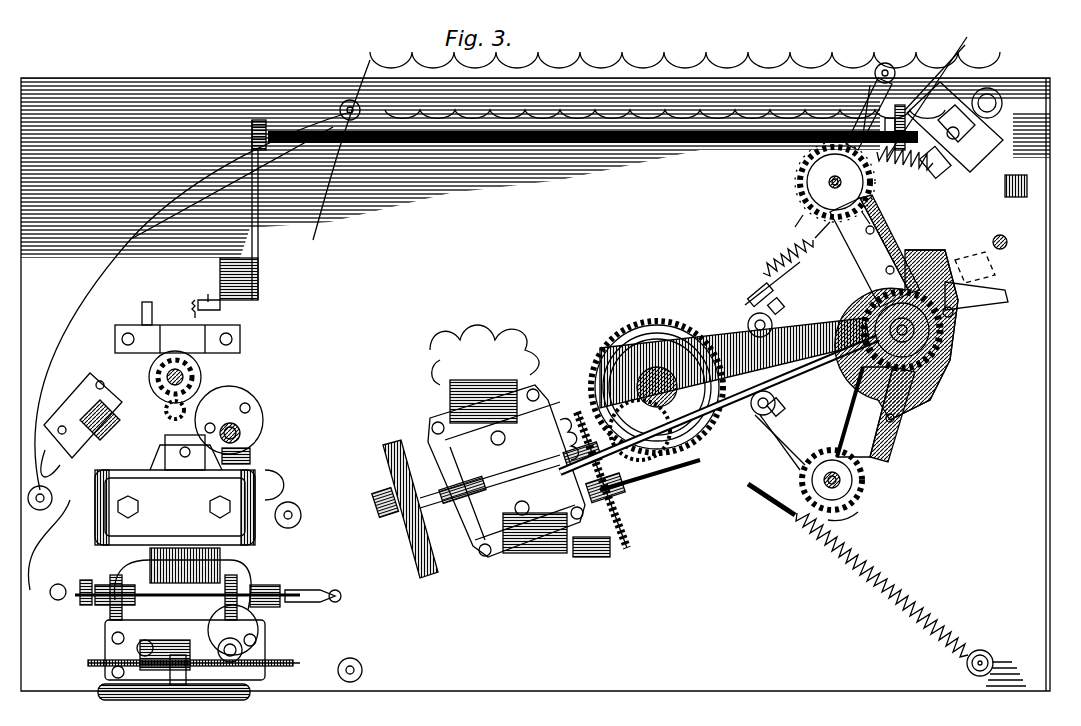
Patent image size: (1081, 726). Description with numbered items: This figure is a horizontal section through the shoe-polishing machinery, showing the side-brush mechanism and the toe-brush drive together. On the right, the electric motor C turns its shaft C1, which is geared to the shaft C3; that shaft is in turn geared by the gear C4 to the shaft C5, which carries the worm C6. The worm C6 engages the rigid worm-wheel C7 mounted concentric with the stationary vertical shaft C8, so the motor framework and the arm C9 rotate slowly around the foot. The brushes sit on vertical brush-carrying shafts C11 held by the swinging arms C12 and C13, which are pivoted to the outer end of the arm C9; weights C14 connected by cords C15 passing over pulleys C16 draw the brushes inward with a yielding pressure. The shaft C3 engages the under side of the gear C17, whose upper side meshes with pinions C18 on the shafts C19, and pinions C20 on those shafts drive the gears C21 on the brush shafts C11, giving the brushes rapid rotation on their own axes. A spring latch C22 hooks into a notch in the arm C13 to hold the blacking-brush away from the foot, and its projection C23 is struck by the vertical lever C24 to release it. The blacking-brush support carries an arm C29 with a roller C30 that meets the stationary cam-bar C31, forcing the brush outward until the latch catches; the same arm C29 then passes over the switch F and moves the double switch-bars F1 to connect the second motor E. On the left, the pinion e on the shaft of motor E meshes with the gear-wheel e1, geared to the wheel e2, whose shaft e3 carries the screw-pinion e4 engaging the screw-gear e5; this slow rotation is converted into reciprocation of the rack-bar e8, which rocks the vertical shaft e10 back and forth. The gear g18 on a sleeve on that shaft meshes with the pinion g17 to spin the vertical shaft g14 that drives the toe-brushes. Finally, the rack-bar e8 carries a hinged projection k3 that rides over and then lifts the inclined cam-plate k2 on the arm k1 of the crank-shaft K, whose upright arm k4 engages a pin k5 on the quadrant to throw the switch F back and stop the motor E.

The crank-shaft K is at (718, 143).
The arm k1 is at (259, 226).
The inclined cam-plate k2 is at (258, 272).
The hinged projection k3 is at (222, 305).
The upright arm k4 is at (935, 93).
The pin k5 is at (906, 118).
The rack-bar e8 is at (202, 318).
The electric motor E is at (180, 491).
The vertical shaft e10 is at (183, 377).
The gear g18 is at (184, 408).
The pinion g17 is at (98, 415).
The vertical shaft g14 is at (240, 416).
The screw-pinion e4 is at (250, 456).
The screw-gear e5 is at (154, 520).
The shaft e3 is at (215, 643).
The wheel e2 is at (225, 666).
The gear-wheel e1 is at (100, 668).
The pinion e is at (178, 672).
The motor shaft C1 is at (423, 509).
The electric motor C is at (515, 441).
The gear C4 is at (628, 548).
The shaft C5 is at (605, 458).
The worm C6 is at (712, 478).
The worm-wheel C7 is at (660, 320).
The stationary shaft C8 is at (632, 335).
The shaft C3 is at (1027, 186).
The arm C9 is at (770, 345).
The roller C30 is at (892, 68).
The arm C29 is at (862, 120).
The switch F is at (955, 127).
The double switch-bars F1 is at (940, 178).
The cam-bar C31 is at (835, 182).
The brush-carrying shaft C11 is at (830, 182).
The gear C21 is at (868, 520).
The pinion C20 is at (860, 205).
The swinging arm C13 is at (900, 255).
The shaft C19 is at (888, 235).
The swinging arm C12 is at (905, 412).
The gear C17 is at (940, 345).
The pinion C18 is at (958, 382).
The vertical lever C24 is at (1008, 243).
The spring latch C22 is at (975, 265).
The projection C23 is at (1009, 298).
The pulley C16 is at (758, 292).
The cord C15 is at (780, 278).
The weight C14 is at (762, 436).